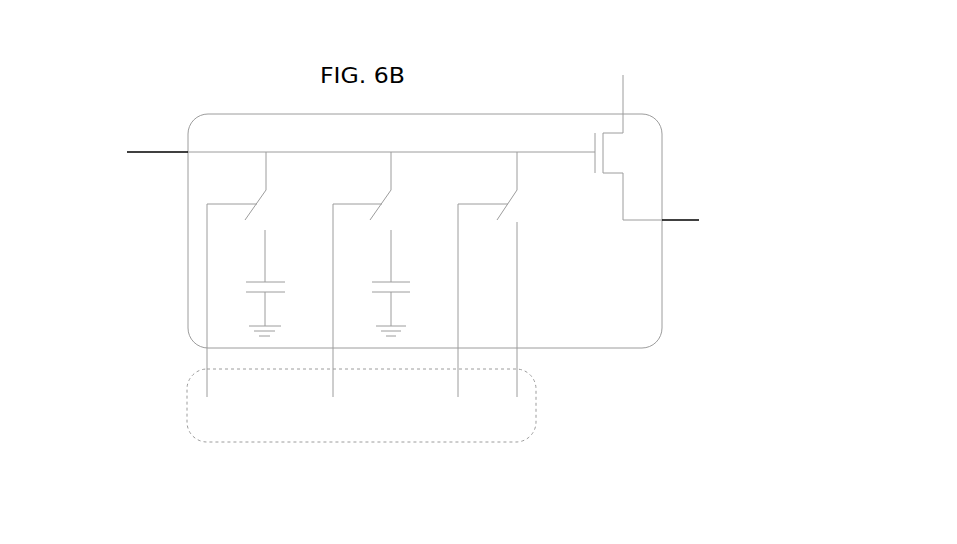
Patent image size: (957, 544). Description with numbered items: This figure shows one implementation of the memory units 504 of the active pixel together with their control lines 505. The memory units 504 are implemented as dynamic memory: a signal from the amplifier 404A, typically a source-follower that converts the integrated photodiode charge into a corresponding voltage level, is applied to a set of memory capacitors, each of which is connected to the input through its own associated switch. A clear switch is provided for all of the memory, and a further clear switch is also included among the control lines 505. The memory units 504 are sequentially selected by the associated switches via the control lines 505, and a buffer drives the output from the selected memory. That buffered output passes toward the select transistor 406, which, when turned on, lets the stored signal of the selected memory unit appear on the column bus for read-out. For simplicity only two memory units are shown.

The amplifier 404A is at (305, 147).
The select transistor 406 is at (680, 225).
The memory units 504 is at (662, 278).
The control lines 505 is at (536, 403).